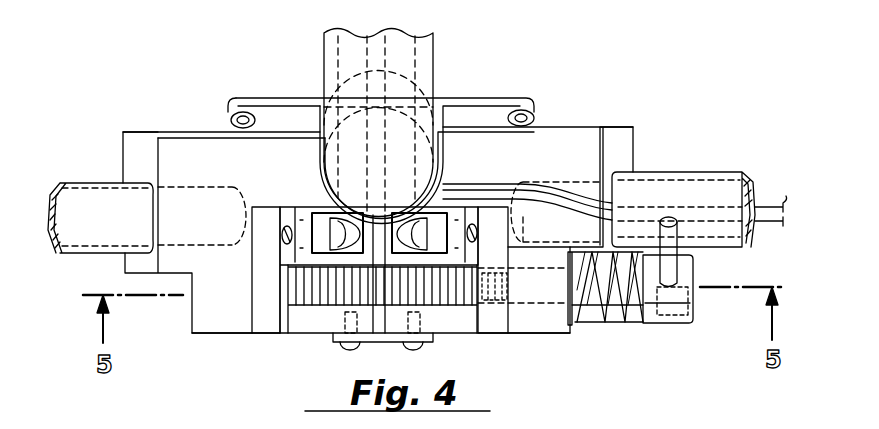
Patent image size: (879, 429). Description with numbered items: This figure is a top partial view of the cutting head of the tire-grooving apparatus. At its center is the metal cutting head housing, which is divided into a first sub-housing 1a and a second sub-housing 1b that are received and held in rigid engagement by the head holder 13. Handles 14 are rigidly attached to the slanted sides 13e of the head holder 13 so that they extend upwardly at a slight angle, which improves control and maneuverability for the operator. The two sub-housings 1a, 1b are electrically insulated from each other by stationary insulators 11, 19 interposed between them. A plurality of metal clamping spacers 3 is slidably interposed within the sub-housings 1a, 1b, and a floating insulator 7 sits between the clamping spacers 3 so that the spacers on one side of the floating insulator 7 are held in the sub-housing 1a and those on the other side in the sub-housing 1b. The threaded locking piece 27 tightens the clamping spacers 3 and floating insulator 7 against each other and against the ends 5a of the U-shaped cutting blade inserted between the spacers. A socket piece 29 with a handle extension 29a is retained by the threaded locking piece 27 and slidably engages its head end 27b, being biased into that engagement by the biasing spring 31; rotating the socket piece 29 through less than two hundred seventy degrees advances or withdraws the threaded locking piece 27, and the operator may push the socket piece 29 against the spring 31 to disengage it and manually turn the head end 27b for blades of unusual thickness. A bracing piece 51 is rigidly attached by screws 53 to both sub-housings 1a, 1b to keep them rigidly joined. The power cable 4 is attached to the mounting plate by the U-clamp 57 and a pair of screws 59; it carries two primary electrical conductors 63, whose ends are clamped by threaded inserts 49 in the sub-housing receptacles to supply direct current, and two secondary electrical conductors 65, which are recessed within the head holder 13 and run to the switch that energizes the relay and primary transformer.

The first sub-housing 1a is at (280, 327).
The second sub-housing 1b is at (498, 320).
The clamping spacers 3 is at (300, 322).
The power cable 4 is at (422, 67).
The ends of cutting blade 5a is at (340, 297).
The floating insulator 7 is at (382, 293).
The stationary insulator 11 is at (386, 318).
The head holder 13 is at (543, 160).
The slanted sides of head holder 13e is at (135, 152).
The handles 14 is at (93, 183).
The stationary insulator 19 is at (380, 242).
The threaded locking piece 27 is at (613, 295).
The head end of threaded locking piece 27b is at (698, 303).
The socket piece 29 is at (650, 322).
The handle extension 29a is at (680, 225).
The biasing spring 31 is at (605, 315).
The threaded inserts 49 is at (285, 232).
The bracing piece 51 is at (364, 353).
The screws 53 is at (343, 345).
The U-clamp 57 is at (473, 122).
The screws 59 is at (245, 110).
The primary electrical conductors 63 is at (345, 230).
The secondary electrical conductors 65 is at (765, 205).